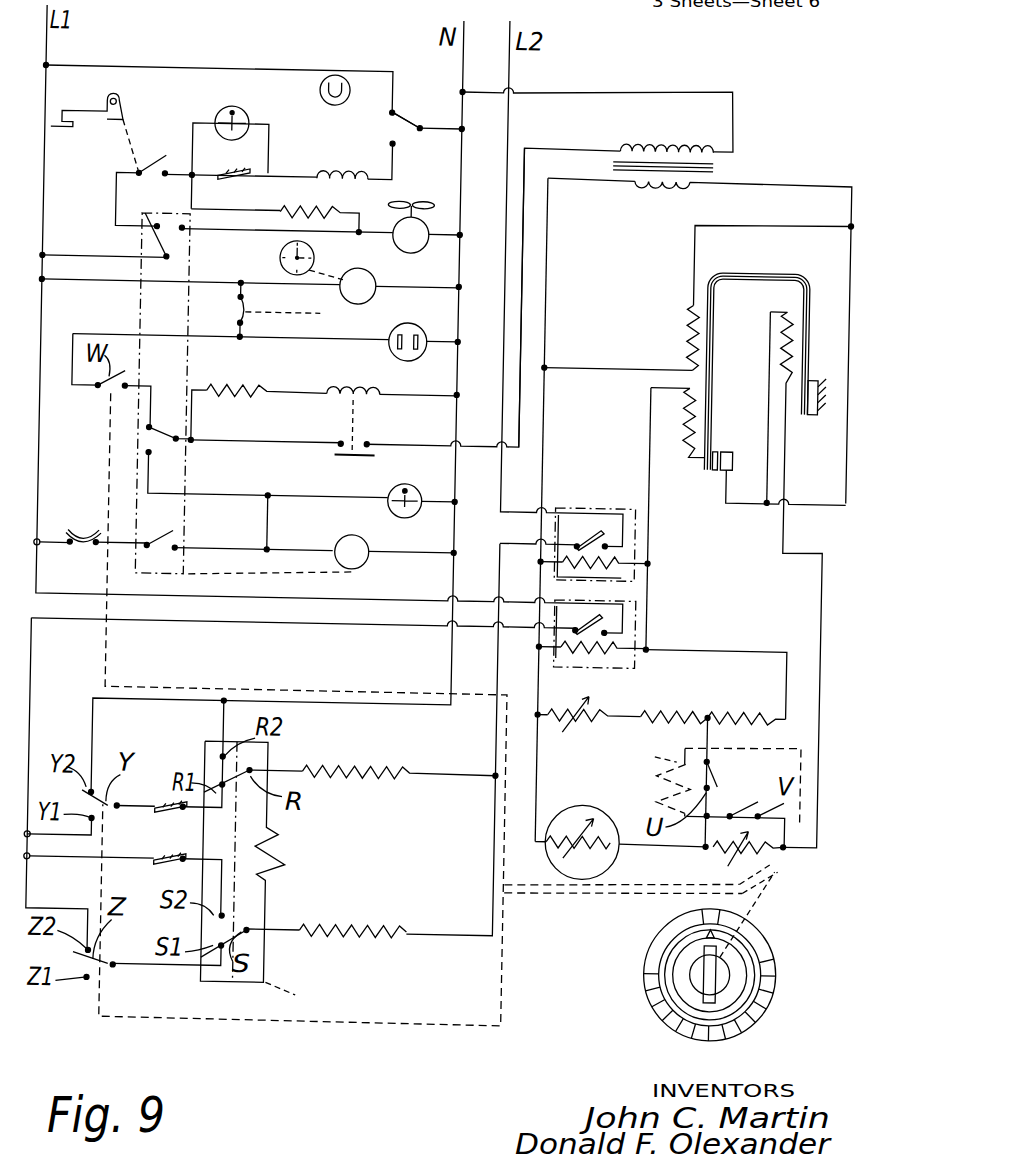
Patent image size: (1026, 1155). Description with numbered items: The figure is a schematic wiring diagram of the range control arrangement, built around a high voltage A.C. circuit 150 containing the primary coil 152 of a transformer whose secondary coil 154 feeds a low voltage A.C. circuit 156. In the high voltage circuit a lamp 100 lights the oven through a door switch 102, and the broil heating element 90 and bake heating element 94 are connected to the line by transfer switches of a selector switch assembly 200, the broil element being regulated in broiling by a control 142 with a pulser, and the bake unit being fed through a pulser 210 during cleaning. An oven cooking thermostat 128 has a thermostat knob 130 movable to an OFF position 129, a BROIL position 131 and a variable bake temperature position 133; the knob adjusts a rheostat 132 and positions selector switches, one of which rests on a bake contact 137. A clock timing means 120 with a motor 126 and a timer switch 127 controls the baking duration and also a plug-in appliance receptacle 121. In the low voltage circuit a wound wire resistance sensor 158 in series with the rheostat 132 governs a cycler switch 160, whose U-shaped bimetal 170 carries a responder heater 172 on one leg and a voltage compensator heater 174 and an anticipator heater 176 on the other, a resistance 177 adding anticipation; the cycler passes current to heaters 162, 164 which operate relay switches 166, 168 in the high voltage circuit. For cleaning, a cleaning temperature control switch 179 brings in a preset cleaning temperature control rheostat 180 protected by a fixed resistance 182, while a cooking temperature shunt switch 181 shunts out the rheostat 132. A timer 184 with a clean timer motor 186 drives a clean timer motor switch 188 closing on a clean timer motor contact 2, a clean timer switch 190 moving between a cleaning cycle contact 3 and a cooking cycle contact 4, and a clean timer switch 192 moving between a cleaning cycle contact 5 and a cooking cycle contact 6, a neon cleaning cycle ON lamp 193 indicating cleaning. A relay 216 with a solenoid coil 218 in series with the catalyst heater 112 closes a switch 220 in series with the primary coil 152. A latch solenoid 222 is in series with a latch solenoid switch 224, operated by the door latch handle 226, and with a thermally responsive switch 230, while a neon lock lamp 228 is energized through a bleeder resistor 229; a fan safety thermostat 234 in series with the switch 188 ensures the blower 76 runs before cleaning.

The clean timer motor contact 2 is at (184, 548).
The cleaning cycle contact 3 is at (150, 456).
The cooking cycle contact 4 is at (150, 422).
The cleaning cycle contact 5 is at (185, 228).
The cooking cycle contact 6 is at (160, 224).
The blower 76 is at (418, 247).
The broil heating element 90 is at (373, 760).
The bake heating element 94 is at (382, 918).
The lamp 100 is at (321, 86).
The door switch 102 is at (403, 114).
The catalyst heater 112 is at (243, 390).
The clock timing means 120 is at (283, 250).
The plug-in appliance receptacle 121 is at (395, 331).
The motor 126 is at (381, 292).
The timer switch 127 is at (245, 302).
The oven cooking thermostat 128 is at (690, 920).
The OFF position 129 is at (722, 900).
The thermostat knob 130 is at (748, 975).
The BROIL position 131 is at (782, 935).
The rheostat 132 is at (790, 848).
The variable bake temperature position 133 is at (664, 990).
The bake contact 137 is at (134, 380).
The control 142 is at (182, 798).
The high voltage A.C. circuit 150 is at (595, 269).
The primary coil 152 is at (672, 130).
The secondary coil 154 is at (660, 180).
The low voltage A.C. circuit 156 is at (694, 512).
The wound wire resistance sensor 158 is at (582, 815).
The cycler switch 160 is at (730, 460).
The heater 162 is at (628, 642).
The heater 164 is at (630, 560).
The relay switch 166 is at (620, 617).
The relay switch 168 is at (596, 528).
The U-shaped bimetal 170 is at (765, 262).
The responder heater 172 is at (788, 310).
The voltage compensator heater 174 is at (690, 310).
The anticipator heater 176 is at (702, 400).
The resistance 177 is at (745, 700).
The cleaning temperature control switch 179 is at (735, 758).
The cleaning temperature control rheostat 180 is at (600, 720).
The cooking temperature shunt switch 181 is at (750, 800).
The fixed resistance 182 is at (690, 700).
The timer 184 is at (190, 517).
The clean timer motor 186 is at (376, 552).
The clean timer motor switch 188 is at (174, 528).
The clean timer switch 190 is at (180, 435).
The clean timer switch 192 is at (160, 238).
The neon cleaning cycle ON lamp 193 is at (404, 511).
The selector switch assembly 200 is at (453, 712).
The pulser 210 is at (182, 852).
The relay 216 is at (444, 297).
The solenoid coil 218 is at (356, 380).
The switch 220 is at (348, 448).
The latch solenoid 222 is at (345, 165).
The latch solenoid switch 224 is at (155, 162).
The door latch handle 226 is at (92, 123).
The neon lock lamp 228 is at (233, 102).
The bleeder resistor 229 is at (305, 206).
The thermally responsive switch 230 is at (240, 176).
The fan safety thermostat 234 is at (88, 548).